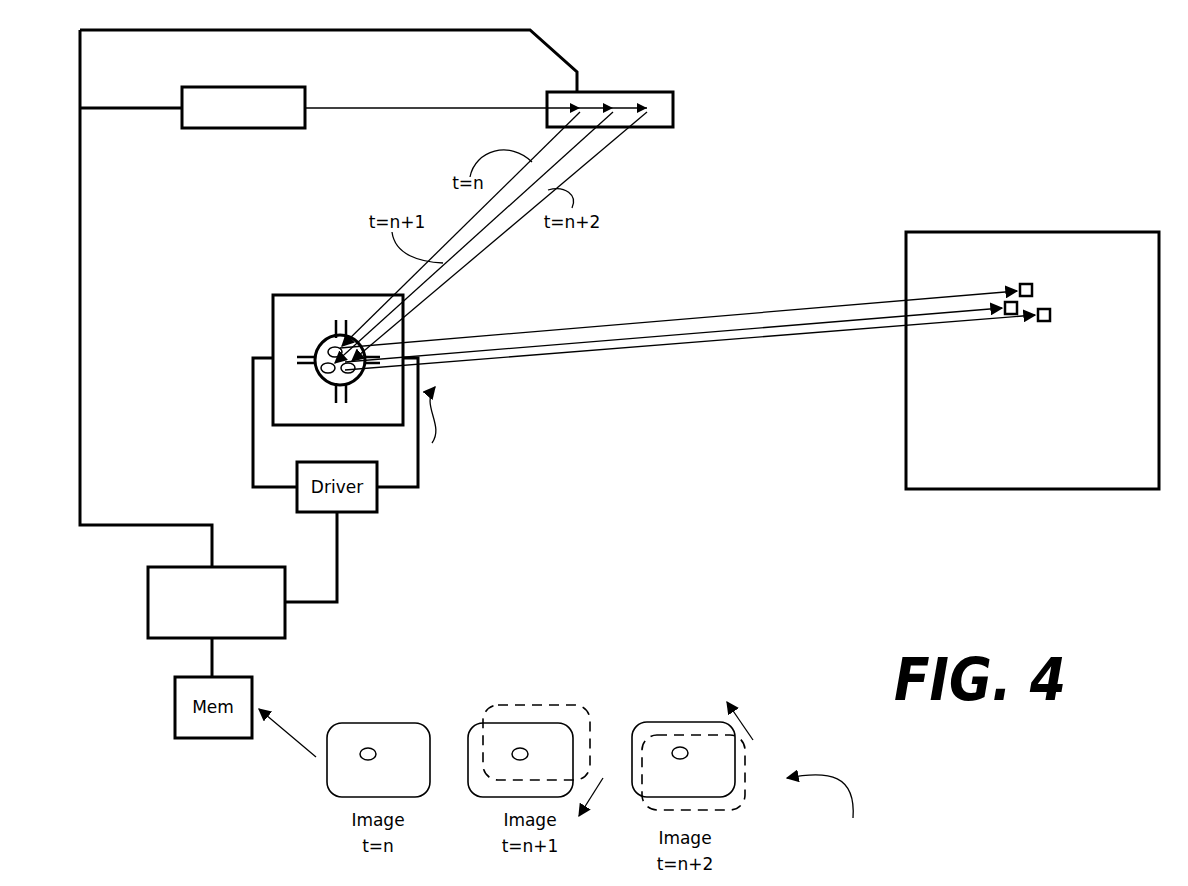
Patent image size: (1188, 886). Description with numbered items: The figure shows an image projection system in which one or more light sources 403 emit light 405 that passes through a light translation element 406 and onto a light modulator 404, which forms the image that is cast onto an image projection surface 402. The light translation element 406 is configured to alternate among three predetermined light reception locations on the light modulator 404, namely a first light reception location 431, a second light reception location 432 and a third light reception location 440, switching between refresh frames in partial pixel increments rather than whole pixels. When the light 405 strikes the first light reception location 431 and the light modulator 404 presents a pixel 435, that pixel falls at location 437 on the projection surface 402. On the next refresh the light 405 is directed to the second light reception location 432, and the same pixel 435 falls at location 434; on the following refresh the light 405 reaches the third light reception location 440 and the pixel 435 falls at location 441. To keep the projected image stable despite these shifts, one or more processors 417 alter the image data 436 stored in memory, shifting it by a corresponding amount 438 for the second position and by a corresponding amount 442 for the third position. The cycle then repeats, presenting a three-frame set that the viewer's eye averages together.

The image projection surface 402 is at (1023, 232).
The light source 403 is at (232, 128).
The light modulator 404 is at (273, 335).
The light 405 is at (476, 88).
The light translation element 406 is at (673, 117).
The one or more processors 417 is at (148, 588).
The first light reception location 431 is at (333, 346).
The second light reception location 432 is at (321, 369).
The location on the projection surface 434 is at (1005, 300).
The pixel 435 is at (680, 747).
The image data 436 is at (830, 808).
The location on the projection surface 437 is at (1028, 284).
The corresponding amount of image data shift 438 is at (591, 800).
The third light reception location 440 is at (348, 374).
The location on the projection surface 441 is at (1051, 316).
The corresponding amount of image data shift 442 is at (742, 735).